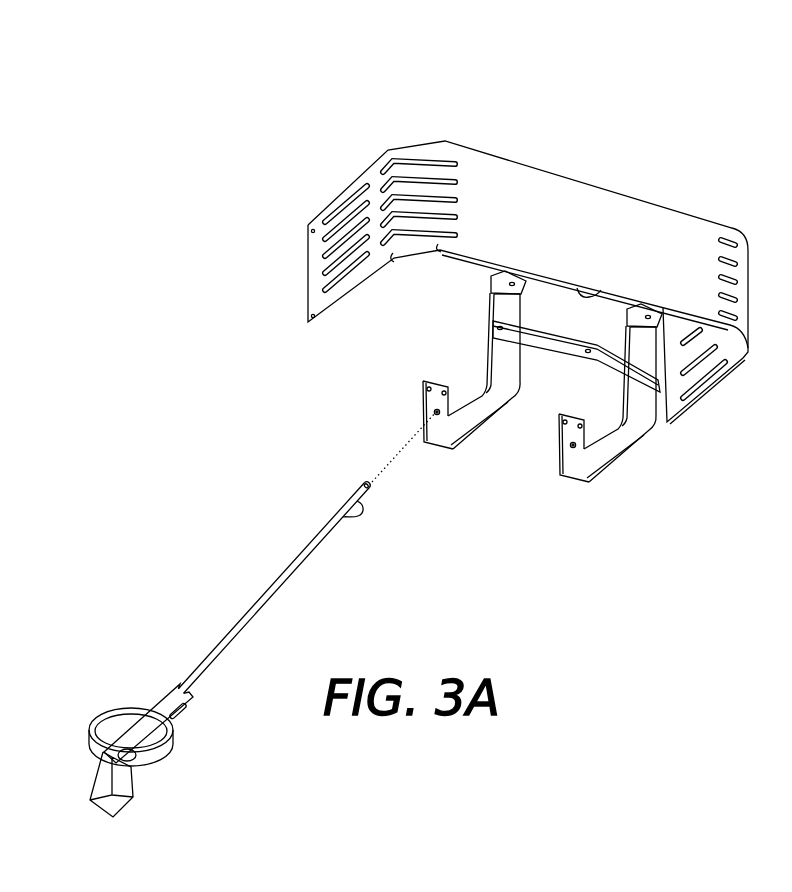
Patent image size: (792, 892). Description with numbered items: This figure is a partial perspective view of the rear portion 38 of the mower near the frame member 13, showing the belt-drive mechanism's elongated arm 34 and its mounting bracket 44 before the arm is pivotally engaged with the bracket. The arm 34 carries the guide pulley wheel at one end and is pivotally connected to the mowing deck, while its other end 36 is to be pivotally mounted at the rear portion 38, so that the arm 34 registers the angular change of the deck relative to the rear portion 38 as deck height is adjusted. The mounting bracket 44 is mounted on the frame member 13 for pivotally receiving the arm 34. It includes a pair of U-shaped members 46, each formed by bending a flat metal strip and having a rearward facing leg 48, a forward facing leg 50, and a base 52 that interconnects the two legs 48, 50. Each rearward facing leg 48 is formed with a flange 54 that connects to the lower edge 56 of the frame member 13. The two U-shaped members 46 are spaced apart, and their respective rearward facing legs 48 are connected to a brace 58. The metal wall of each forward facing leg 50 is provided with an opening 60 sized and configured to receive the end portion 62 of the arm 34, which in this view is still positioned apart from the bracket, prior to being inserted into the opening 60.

The frame member 13 is at (598, 212).
The elongated arm 34 is at (285, 624).
The another end 36 is at (369, 482).
The rear portion 38 is at (472, 105).
The mounting bracket 44 is at (581, 516).
The U-shaped members 46 is at (540, 480).
The rearward facing leg 48 is at (490, 393).
The forward facing leg 50 is at (432, 422).
The base 52 is at (481, 390).
The flange 54 is at (514, 284).
The lower edge 56 is at (604, 298).
The brace 58 is at (612, 365).
The opening 60 is at (437, 390).
The end portion 62 is at (350, 514).